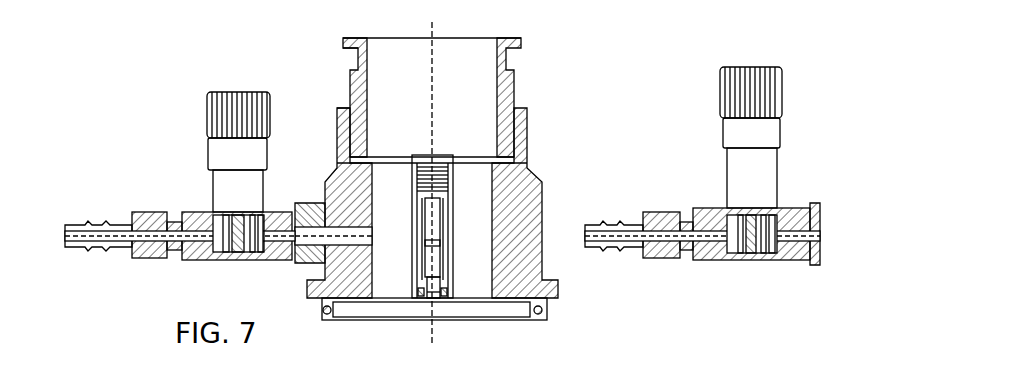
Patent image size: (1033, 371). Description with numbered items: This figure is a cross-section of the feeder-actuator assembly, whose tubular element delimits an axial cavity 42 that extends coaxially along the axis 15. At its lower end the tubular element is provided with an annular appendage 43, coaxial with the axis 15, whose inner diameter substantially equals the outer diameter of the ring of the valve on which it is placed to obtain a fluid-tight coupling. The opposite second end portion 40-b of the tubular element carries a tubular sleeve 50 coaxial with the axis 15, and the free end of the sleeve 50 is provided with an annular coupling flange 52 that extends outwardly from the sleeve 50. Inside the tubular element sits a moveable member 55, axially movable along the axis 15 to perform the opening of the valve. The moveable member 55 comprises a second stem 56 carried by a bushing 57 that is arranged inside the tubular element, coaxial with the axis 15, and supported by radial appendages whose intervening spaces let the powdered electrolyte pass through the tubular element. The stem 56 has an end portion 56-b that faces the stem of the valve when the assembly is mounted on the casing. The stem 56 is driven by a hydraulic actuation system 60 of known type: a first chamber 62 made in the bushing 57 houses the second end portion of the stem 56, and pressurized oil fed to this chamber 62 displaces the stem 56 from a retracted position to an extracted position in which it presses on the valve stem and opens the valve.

The axis 15 is at (427, 60).
The second end portion 40-b is at (313, 117).
The axial cavity 42 is at (385, 207).
The annular appendage 43 is at (537, 317).
The tubular sleeve 50 is at (513, 90).
The annular coupling flange 52 is at (345, 40).
The moveable member 55 is at (450, 207).
The second stem 56 is at (428, 225).
The end portion 56-b is at (435, 298).
The bushing 57 is at (453, 237).
The hydraulic actuation system 60 is at (702, 218).
The first chamber 62 is at (444, 221).